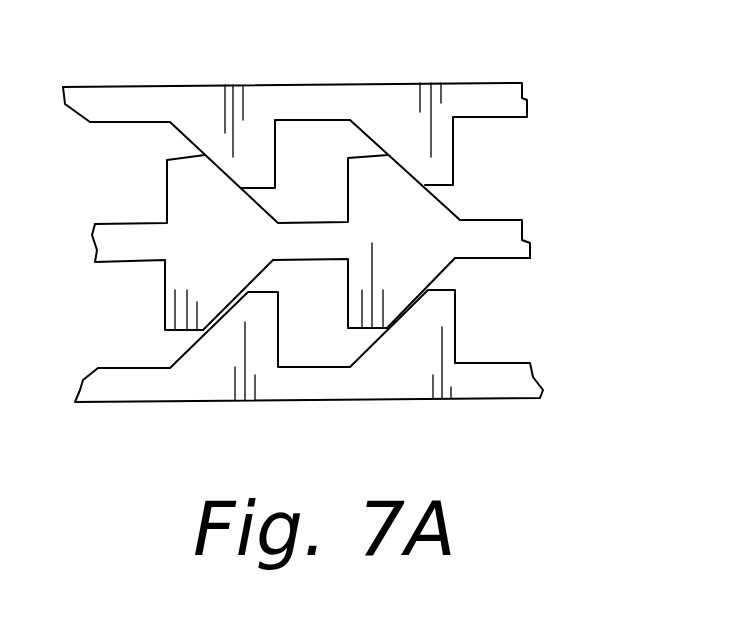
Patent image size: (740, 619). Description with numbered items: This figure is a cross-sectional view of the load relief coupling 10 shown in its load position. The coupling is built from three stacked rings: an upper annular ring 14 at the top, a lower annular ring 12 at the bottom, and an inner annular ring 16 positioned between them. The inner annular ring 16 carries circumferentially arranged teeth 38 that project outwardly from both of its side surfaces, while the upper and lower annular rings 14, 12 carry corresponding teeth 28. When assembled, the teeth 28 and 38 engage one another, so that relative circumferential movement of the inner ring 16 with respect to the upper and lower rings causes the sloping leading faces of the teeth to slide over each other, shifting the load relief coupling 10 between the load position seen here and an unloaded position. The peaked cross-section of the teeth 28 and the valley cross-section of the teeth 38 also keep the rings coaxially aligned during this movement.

The load relief coupling 10 is at (515, 413).
The lower annular ring 12 is at (208, 388).
The upper annular ring 14 is at (132, 88).
The inner annular ring 16 is at (117, 250).
The teeth 28 is at (448, 152).
The teeth 38 is at (437, 223).